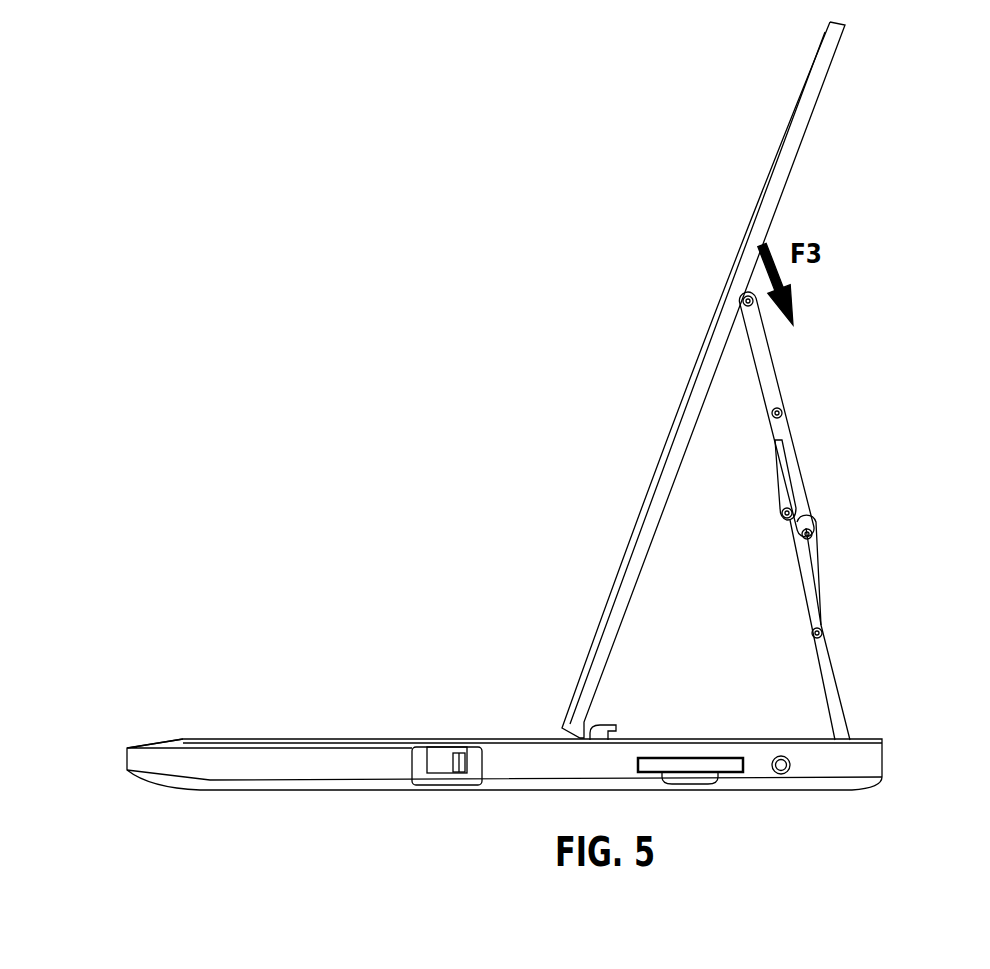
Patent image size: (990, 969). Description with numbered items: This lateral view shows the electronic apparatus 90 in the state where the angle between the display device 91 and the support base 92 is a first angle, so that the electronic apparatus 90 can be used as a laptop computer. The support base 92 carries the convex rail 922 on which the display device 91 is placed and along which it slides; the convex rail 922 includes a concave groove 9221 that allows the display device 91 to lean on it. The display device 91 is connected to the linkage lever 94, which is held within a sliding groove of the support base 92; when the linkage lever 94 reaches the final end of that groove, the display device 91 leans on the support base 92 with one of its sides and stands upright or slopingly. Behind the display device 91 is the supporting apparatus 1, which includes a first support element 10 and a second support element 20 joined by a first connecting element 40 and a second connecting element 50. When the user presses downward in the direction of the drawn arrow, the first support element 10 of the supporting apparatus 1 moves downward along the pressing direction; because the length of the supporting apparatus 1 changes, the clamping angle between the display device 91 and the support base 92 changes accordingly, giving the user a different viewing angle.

The supporting apparatus 1 is at (872, 518).
The first support element 10 is at (768, 365).
The second support element 20 is at (813, 630).
The first connecting element 40 is at (785, 495).
The second connecting element 50 is at (813, 552).
The electronic apparatus 90 is at (382, 288).
The display device 91 is at (757, 236).
The support base 92 is at (498, 748).
The convex rail 922 is at (330, 740).
The concave groove 9221 is at (178, 745).
The linkage lever 94 is at (595, 737).